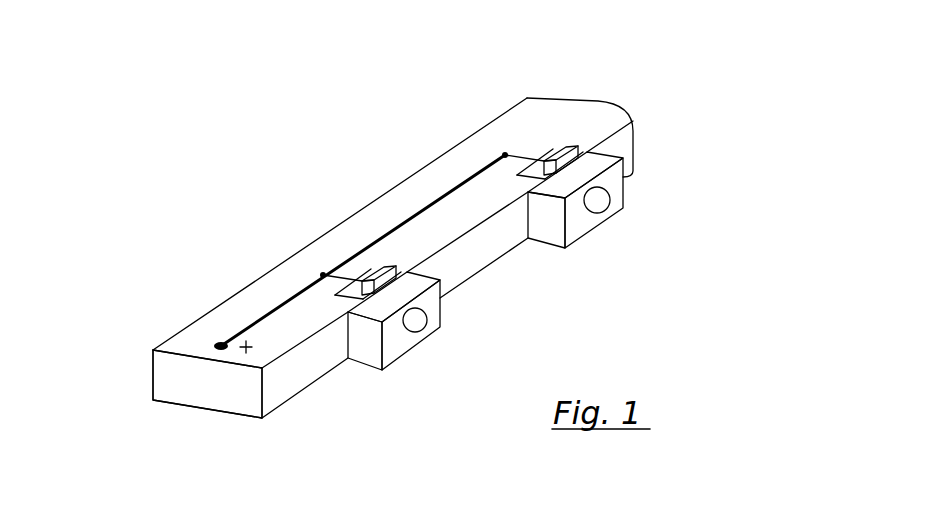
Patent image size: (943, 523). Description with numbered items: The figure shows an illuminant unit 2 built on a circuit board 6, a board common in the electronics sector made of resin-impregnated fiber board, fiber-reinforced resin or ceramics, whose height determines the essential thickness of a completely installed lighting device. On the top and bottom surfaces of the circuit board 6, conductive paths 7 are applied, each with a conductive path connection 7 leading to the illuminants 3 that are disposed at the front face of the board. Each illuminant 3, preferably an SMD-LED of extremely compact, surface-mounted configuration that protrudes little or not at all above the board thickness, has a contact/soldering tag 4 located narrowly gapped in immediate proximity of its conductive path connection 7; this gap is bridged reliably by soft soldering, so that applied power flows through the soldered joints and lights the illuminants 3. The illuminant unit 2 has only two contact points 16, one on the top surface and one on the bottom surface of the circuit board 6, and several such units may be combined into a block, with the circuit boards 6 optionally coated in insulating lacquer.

The illuminant unit 2 is at (326, 187).
The illuminant 3 is at (578, 223).
The contact/soldering tag 4 is at (553, 153).
The circuit board 6 is at (212, 395).
The conductive path 7 is at (323, 275).
The contact point 16 is at (221, 346).